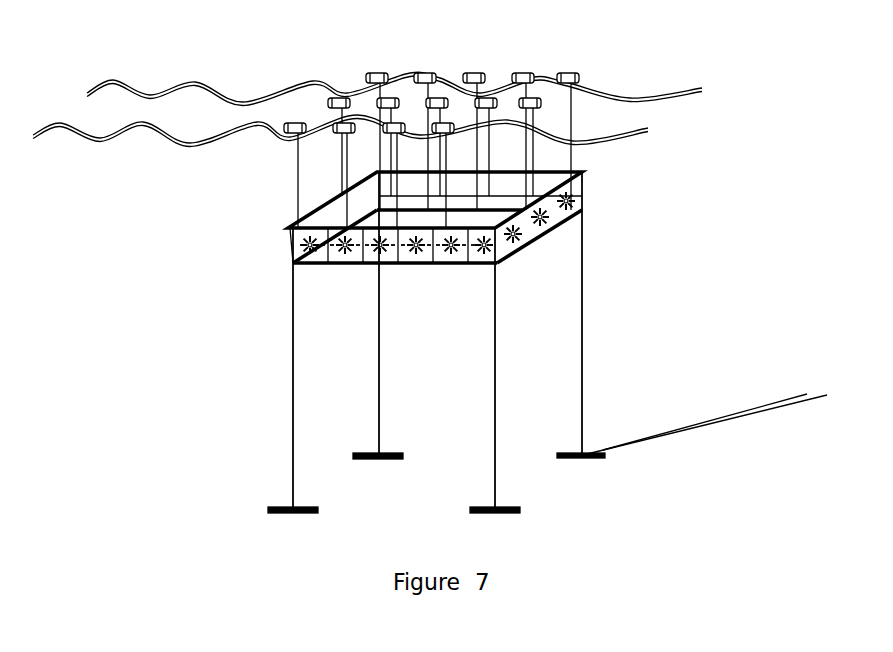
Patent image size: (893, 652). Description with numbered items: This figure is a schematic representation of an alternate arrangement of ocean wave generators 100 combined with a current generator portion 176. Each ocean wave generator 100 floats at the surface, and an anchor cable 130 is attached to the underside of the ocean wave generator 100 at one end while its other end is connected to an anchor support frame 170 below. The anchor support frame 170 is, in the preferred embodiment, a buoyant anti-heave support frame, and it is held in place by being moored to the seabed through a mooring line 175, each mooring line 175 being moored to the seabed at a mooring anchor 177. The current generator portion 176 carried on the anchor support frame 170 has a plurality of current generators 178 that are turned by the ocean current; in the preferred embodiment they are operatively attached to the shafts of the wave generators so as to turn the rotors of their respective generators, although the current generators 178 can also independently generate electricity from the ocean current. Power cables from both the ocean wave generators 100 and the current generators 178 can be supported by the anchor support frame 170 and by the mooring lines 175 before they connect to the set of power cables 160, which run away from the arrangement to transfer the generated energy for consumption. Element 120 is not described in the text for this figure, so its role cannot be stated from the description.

The ocean wave generator 100 is at (618, 45).
The floats 120 is at (579, 75).
The anchor cable 130 is at (573, 126).
The anchor support frame 170 is at (584, 173).
The mooring line 175 is at (583, 315).
The current generator portion 176 is at (592, 182).
The mooring anchor 177 is at (597, 452).
The current generators 178 is at (298, 245).
The power cables 160 is at (697, 422).